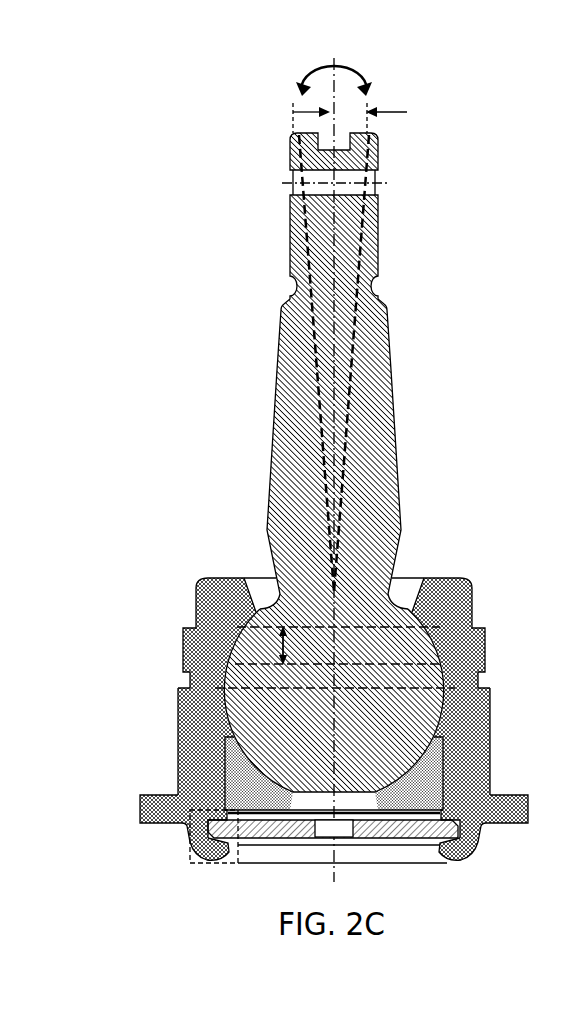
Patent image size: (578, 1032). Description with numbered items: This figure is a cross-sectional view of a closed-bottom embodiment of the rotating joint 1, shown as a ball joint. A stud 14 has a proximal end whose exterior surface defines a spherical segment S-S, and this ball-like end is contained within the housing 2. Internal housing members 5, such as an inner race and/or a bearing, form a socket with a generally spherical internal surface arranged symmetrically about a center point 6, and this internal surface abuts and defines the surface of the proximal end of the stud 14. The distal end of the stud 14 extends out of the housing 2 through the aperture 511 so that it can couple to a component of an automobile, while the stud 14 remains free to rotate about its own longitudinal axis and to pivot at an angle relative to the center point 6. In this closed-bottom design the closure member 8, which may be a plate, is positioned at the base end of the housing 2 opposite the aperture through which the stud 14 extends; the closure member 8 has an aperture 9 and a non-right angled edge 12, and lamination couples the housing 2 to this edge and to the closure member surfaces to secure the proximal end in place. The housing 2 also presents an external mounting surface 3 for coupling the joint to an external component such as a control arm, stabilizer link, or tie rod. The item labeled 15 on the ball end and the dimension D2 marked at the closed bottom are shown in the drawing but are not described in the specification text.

The rotating joint 1 is at (184, 187).
The housing 2 is at (447, 628).
The external mounting surface 3 is at (488, 706).
The internal housing members 5 is at (485, 828).
The center point 6 is at (337, 688).
The closure member 8 is at (266, 841).
The aperture 9 is at (332, 832).
The non-right angled edge 12 is at (472, 857).
The stud 14 is at (365, 255).
The ball 15 is at (415, 720).
The aperture 511 is at (395, 595).
The spherical segment S-S is at (280, 648).
The diameter D2 is at (190, 845).